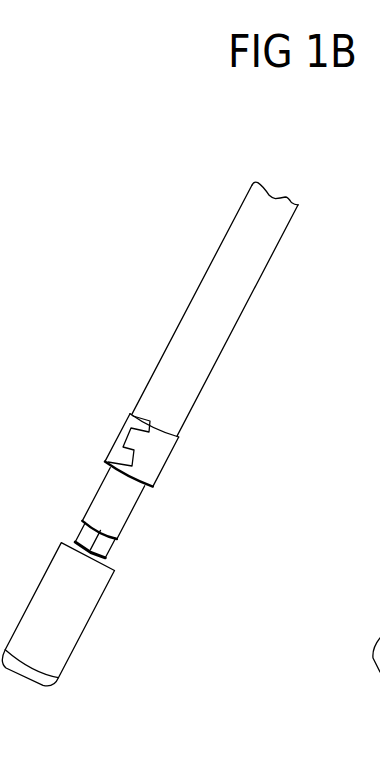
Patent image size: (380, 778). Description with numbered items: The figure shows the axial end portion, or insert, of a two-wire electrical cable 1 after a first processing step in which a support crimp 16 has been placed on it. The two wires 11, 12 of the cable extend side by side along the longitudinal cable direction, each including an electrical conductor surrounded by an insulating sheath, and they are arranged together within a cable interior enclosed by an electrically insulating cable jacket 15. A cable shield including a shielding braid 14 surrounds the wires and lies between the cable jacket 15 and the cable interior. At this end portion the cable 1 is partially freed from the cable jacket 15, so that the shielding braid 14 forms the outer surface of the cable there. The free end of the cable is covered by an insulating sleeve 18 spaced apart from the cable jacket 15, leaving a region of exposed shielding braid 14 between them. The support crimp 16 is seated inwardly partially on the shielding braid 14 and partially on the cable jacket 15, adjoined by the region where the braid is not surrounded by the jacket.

The multi-wire electrical cable 1 is at (203, 234).
The cable jacket 15 is at (215, 327).
The support crimp 16 is at (157, 447).
The shielding braid 14 is at (118, 505).
The wire 11 is at (85, 532).
The wire 12 is at (100, 543).
The insulating sleeve 18 is at (78, 618).